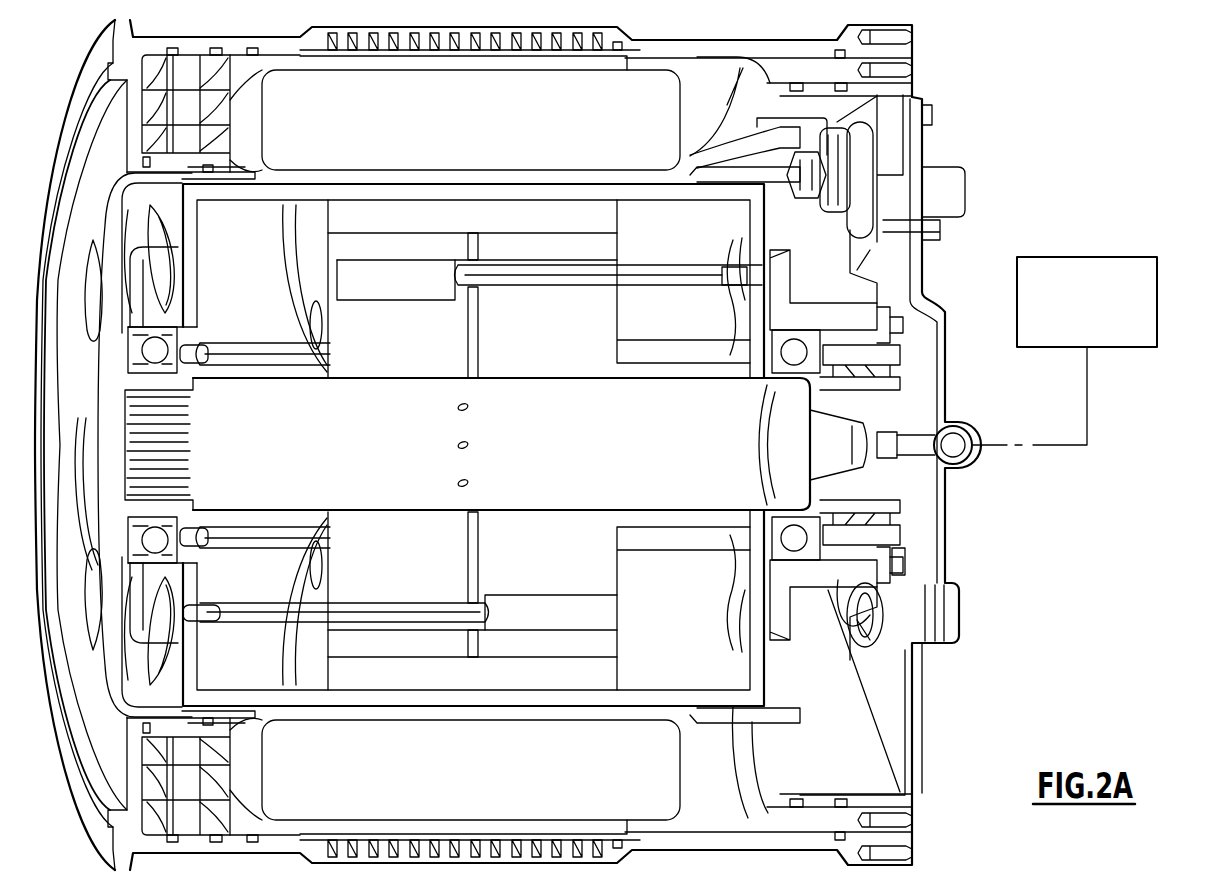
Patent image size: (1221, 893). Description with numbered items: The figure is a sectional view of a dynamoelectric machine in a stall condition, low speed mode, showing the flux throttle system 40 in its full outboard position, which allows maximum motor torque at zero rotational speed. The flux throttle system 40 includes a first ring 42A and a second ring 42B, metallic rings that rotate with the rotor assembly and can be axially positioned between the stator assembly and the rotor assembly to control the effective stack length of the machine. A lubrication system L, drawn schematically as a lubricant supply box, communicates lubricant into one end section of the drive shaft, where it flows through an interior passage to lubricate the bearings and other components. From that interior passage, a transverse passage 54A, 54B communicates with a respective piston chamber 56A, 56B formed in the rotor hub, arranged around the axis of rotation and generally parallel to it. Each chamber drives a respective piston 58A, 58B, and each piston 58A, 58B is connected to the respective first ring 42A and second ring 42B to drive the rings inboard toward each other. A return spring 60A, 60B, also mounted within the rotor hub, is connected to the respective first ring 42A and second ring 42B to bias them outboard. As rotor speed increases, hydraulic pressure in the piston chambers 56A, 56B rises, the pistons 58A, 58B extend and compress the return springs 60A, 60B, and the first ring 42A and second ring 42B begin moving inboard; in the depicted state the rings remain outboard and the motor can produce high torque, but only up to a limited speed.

The flux throttle system 40 is at (782, 690).
The first ring 42A is at (657, 697).
The second ring 42B is at (258, 695).
The transverse passage 54A is at (471, 336).
The transverse passage 54B is at (472, 553).
The piston chamber 56A is at (374, 283).
The piston chamber 56B is at (546, 598).
The piston 58A is at (543, 278).
The piston 58B is at (376, 600).
The return spring 60A is at (704, 300).
The return spring 60B is at (692, 600).
The lubrication system L is at (1170, 300).